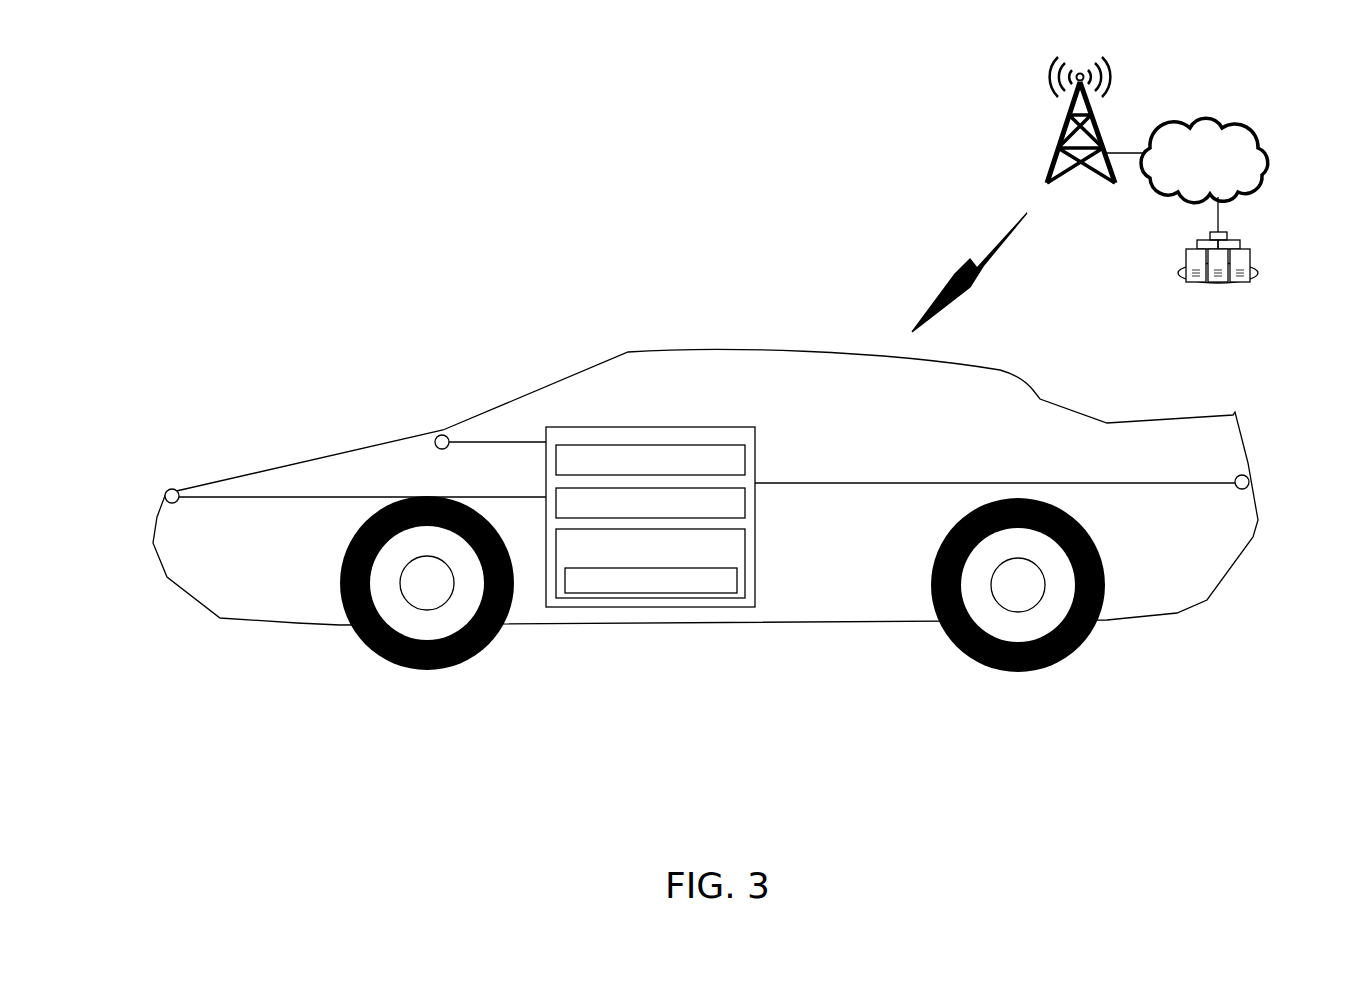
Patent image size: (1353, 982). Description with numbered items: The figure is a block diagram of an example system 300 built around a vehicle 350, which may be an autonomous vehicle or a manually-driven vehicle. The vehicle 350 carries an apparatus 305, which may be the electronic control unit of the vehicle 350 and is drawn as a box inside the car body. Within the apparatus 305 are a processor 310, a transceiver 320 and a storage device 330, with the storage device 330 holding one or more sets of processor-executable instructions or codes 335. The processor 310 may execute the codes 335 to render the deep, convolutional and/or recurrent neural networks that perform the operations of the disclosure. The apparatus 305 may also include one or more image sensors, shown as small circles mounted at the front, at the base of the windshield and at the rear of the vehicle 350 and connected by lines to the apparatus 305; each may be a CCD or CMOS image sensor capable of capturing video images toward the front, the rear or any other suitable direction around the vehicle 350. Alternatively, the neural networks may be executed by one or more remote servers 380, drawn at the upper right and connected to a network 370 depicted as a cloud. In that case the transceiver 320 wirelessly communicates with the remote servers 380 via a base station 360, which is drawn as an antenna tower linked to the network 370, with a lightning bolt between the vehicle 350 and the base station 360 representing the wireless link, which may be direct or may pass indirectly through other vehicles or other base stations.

The system 300 is at (574, 136).
The apparatus 305 is at (650, 496).
The processor 310 is at (650, 460).
The transceiver 320 is at (650, 503).
The storage device 330 is at (650, 563).
The codes 335 is at (651, 580).
The vehicle 350 is at (772, 350).
The base station 360 is at (1060, 173).
The network 370 is at (1204, 160).
The remote servers 380 is at (1243, 250).